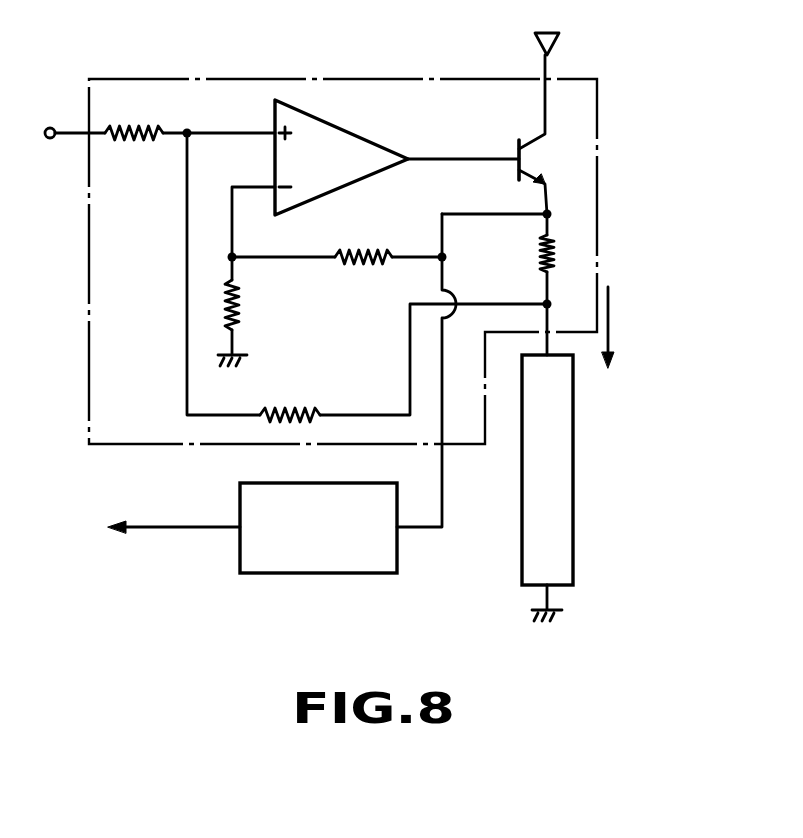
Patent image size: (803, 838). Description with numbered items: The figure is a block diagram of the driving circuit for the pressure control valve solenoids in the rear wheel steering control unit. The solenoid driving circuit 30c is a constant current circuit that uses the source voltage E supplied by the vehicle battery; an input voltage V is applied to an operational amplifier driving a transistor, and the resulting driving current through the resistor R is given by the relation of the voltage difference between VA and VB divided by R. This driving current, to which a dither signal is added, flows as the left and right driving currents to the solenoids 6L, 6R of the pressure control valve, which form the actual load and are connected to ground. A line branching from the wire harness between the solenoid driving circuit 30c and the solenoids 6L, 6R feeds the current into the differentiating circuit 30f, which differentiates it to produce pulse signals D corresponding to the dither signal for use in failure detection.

The solenoid driving circuit 30c is at (427, 78).
The differentiating circuit 30f is at (313, 573).
The solenoid 6L is at (605, 454).
The solenoid 6R is at (573, 452).